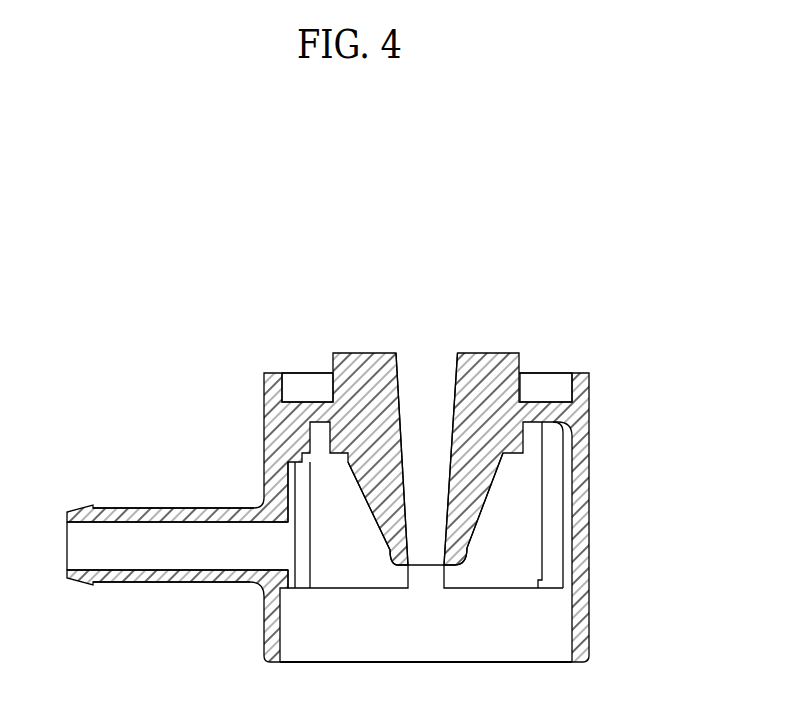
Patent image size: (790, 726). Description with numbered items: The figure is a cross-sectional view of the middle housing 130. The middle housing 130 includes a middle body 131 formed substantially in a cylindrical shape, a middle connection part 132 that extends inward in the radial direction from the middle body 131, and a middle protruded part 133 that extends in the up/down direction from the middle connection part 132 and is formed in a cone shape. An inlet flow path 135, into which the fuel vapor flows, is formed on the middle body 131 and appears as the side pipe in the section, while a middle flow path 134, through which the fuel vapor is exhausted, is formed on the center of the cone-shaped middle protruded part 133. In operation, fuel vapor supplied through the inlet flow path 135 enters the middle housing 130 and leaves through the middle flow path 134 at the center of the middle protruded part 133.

The middle housing 130 is at (199, 308).
The middle body 131 is at (588, 606).
The middle connection part 132 is at (547, 402).
The middle protruded part 133 is at (477, 497).
The middle flow path 134 is at (397, 383).
The inlet flow path 135 is at (142, 548).